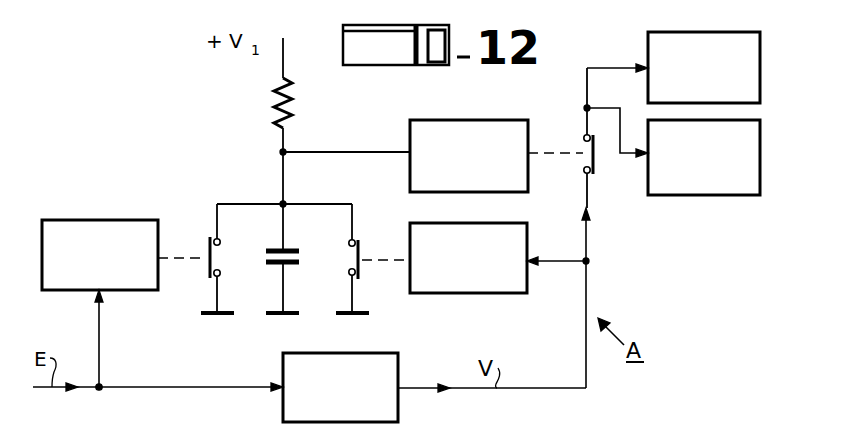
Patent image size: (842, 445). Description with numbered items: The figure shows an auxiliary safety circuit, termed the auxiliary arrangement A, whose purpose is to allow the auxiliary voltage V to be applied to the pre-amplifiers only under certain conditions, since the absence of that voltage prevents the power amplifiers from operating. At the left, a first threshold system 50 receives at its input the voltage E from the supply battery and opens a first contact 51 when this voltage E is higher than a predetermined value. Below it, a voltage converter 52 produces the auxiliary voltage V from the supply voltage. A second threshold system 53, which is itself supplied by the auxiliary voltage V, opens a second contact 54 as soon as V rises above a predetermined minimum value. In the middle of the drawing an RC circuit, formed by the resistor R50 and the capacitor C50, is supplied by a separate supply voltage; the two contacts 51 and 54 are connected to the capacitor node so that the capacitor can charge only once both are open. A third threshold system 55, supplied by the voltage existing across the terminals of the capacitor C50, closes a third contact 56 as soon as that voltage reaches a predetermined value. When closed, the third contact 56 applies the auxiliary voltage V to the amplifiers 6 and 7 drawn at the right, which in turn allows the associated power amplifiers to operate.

The first threshold system 50 is at (77, 220).
The first contact 51 is at (206, 266).
The voltage converter 52 is at (283, 400).
The second threshold system 53 is at (452, 223).
The second contact 54 is at (362, 270).
The third threshold system 55 is at (452, 120).
The third contact 56 is at (596, 170).
The amplifier 6 is at (762, 160).
The amplifier 7 is at (762, 62).
The resistor R50 is at (270, 116).
The capacitor C50 is at (268, 250).